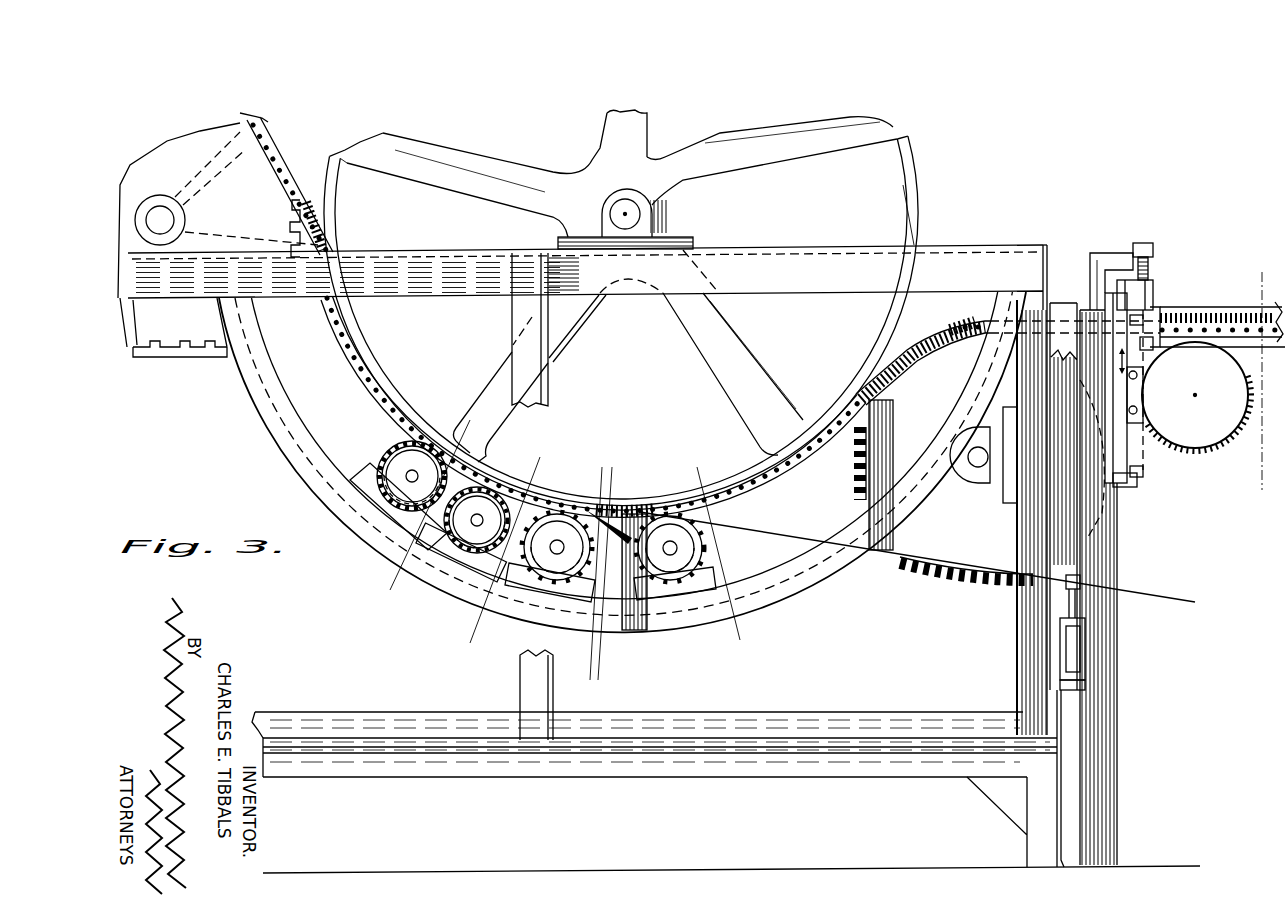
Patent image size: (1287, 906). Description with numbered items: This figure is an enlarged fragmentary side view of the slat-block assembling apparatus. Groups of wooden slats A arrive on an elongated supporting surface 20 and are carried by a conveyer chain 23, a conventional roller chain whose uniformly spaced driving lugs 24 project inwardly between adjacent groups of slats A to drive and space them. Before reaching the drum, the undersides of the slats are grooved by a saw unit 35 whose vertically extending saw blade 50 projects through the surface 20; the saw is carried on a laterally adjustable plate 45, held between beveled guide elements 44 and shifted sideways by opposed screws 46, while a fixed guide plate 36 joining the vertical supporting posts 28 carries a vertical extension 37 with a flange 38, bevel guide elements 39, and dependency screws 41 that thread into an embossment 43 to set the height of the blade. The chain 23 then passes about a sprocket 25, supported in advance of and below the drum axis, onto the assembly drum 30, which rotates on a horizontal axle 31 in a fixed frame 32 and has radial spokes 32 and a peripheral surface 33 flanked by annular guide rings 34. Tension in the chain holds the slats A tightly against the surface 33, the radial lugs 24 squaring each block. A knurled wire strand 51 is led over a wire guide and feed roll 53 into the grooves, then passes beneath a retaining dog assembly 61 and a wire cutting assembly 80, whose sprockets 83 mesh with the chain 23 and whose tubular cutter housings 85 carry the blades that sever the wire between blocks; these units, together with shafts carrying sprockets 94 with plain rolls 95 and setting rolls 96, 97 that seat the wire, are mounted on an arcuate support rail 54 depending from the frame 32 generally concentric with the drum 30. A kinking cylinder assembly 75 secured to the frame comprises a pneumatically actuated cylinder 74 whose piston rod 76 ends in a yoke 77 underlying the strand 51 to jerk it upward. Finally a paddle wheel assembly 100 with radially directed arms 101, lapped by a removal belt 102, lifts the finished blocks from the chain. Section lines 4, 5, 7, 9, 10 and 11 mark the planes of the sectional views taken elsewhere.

The section line 4- 4 is at (696, 478).
The section line 5- 5 is at (613, 483).
The section line 7- 7 is at (601, 483).
The section line 9- 9 is at (538, 461).
The section line 10- 10 is at (482, 444).
The section line 11- 11 is at (1257, 283).
The elongated supporting surface 20 is at (1232, 345).
The conveyer chain 23 is at (808, 456).
The driving lugs 24 is at (900, 340).
The sprockets 25 is at (963, 582).
The vertical supporting posts 28 is at (1108, 557).
The assembly drum 30 is at (932, 177).
The horizontal axle 31 is at (628, 209).
The fixed frame 32 is at (612, 133).
The peripheral surface 33 is at (921, 205).
The annular guide rings 34 is at (928, 227).
The saw unit 35 is at (1200, 452).
The fixed guide plate 36 is at (1120, 497).
The vertical extension 37 is at (1090, 284).
The flange 38 is at (1113, 254).
The bevel guide elements 39 is at (1130, 488).
The dependency screws 41 is at (1145, 252).
The embossment 43 is at (1150, 282).
The beveled guide elements 44 is at (1141, 346).
The laterally adjustable plate 45 is at (1147, 437).
The screws 46 is at (1140, 381).
The saw blade 50 is at (1216, 462).
The wire strand 51 is at (770, 530).
The wire guide and feed roll 53 is at (704, 548).
The arcuate support rail 54 is at (808, 580).
The retaining dog assembly 61 is at (617, 620).
The pneumatically actuated cylinder 74 is at (1085, 627).
The kinking cylinder assembly 75 is at (1075, 652).
The piston rod 76 is at (1065, 594).
The saddle or yoke 77 is at (1085, 585).
The wire cutting assembly 80 is at (548, 592).
The sprockets 83 is at (563, 560).
The tubular cutter housings 85 is at (546, 585).
The sprockets 94 is at (403, 450).
The wire-contacting rolls 95 is at (507, 550).
The setting rolls 96 is at (385, 455).
The wire setting rolls 97 is at (372, 462).
The paddle wheel assembly 100 is at (172, 143).
The elongated radially directed arms 101 is at (270, 127).
The removal belt 102 is at (178, 356).
The slats A is at (970, 326).